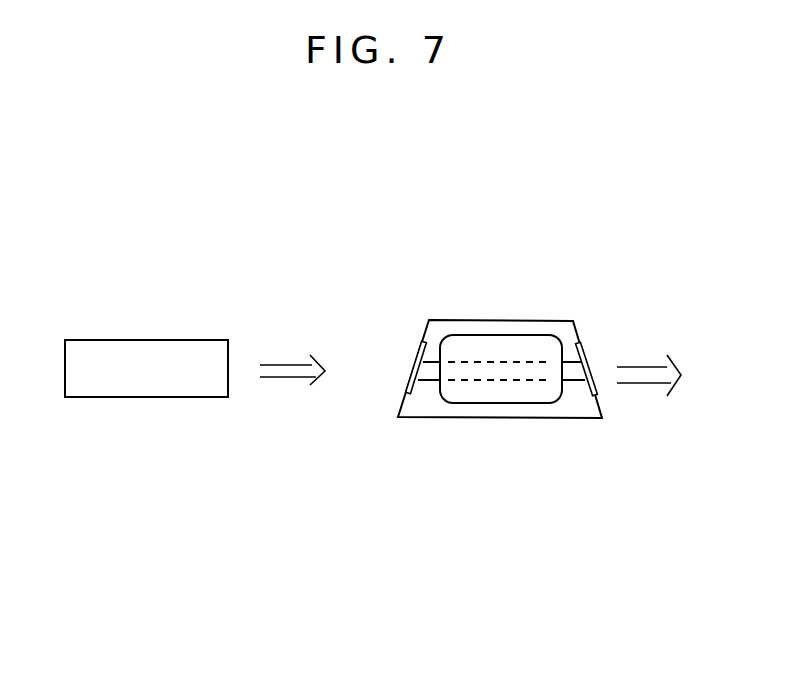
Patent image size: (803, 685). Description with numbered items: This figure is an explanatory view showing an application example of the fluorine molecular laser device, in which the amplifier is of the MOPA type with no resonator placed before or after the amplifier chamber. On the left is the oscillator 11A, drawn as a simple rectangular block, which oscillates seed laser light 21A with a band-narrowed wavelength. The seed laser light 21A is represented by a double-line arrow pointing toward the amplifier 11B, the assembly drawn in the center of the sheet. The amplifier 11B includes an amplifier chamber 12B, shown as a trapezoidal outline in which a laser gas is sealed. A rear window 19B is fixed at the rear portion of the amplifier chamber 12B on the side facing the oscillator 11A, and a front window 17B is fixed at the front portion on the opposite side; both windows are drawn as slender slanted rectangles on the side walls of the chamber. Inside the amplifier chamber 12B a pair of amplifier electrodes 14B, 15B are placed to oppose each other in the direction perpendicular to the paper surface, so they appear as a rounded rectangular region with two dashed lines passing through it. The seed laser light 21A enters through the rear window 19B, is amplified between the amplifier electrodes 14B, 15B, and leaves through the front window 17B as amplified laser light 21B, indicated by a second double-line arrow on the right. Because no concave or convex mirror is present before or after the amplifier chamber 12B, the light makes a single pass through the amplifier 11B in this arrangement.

The oscillator 11A is at (142, 340).
The seed laser light 21A is at (283, 378).
The amplifier 11B is at (510, 337).
The amplifier chamber 12B is at (545, 320).
The amplifier electrode 14B is at (495, 331).
The amplifier electrode 15B is at (501, 371).
The rear window 19B is at (403, 390).
The front window 17B is at (595, 395).
The amplified laser light 21B is at (645, 385).